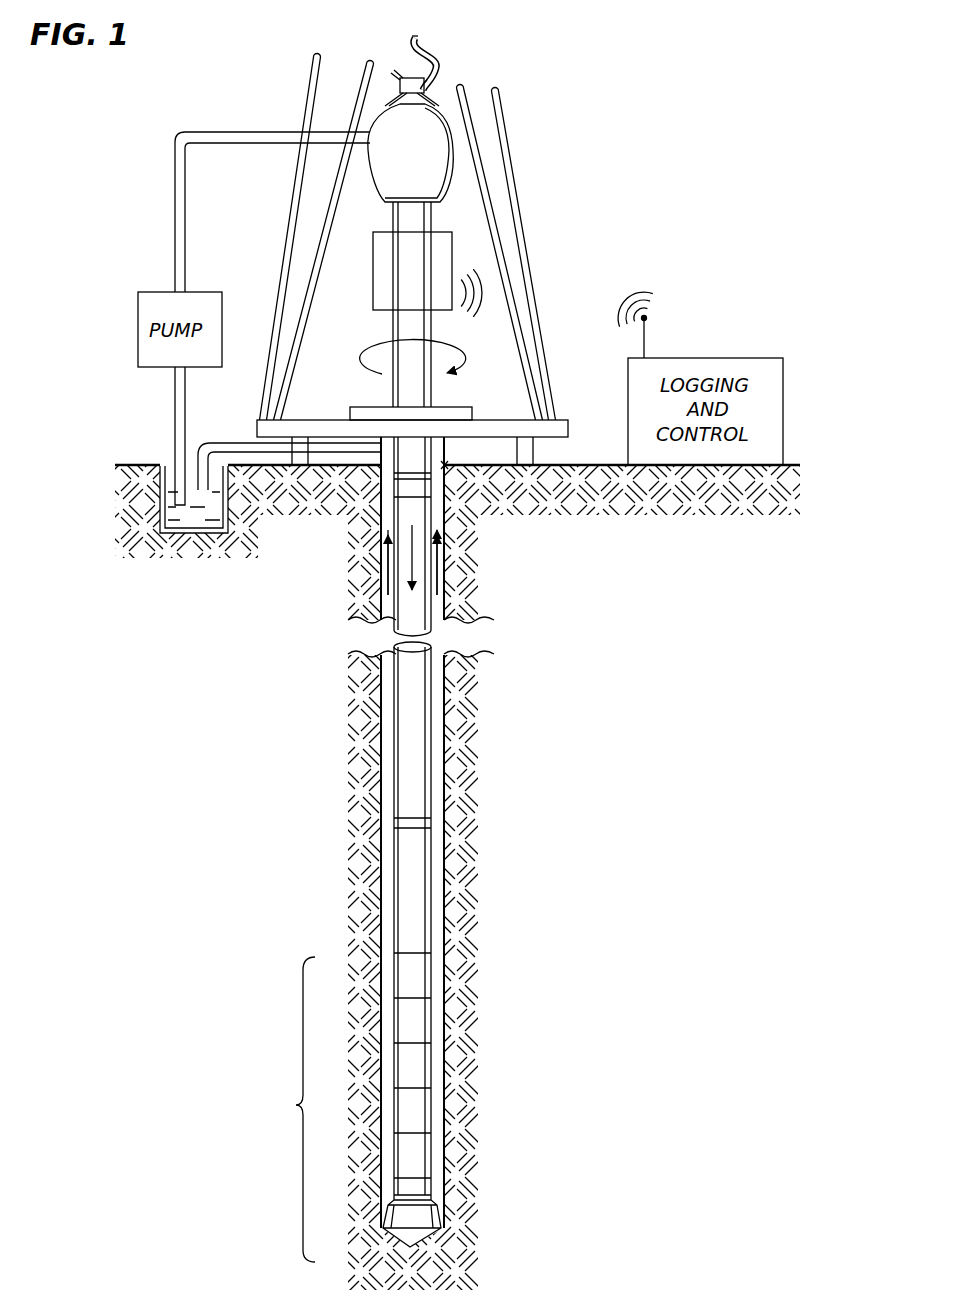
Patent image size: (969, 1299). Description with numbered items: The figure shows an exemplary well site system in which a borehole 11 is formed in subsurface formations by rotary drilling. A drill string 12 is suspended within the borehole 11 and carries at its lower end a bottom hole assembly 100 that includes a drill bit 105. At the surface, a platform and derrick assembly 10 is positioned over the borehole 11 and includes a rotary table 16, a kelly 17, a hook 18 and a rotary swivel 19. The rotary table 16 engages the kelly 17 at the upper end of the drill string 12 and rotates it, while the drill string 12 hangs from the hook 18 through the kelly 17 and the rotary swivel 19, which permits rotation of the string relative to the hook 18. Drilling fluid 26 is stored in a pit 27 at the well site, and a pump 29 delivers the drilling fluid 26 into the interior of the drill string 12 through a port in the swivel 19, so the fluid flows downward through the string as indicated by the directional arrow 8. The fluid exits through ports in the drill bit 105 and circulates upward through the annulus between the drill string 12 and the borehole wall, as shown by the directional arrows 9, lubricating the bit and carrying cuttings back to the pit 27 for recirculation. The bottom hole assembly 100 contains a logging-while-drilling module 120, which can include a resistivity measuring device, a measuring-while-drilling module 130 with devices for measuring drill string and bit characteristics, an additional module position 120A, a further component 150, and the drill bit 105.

The platform and derrick assembly 10 is at (548, 128).
The hook 18 is at (411, 40).
The rotary swivel 19 is at (400, 188).
The kelly 17 is at (405, 385).
The rotary table 16 is at (458, 413).
The borehole 11 is at (446, 463).
The drill string 12 is at (406, 458).
The directional arrows 9 is at (385, 543).
The directional arrow 8 is at (408, 550).
The bottom hole assembly 100 is at (296, 1105).
The logging-while-drilling (LWD) module 120 is at (418, 1022).
The measuring-while-drilling (MWD) module 130 is at (418, 1083).
The LWD/MWD module 120A is at (418, 1114).
The downhole tool 150 is at (418, 1163).
The drill bit 105 is at (412, 1216).
The drilling fluid 26 is at (197, 527).
The pump 29 is at (155, 368).
The pit 27 is at (168, 462).